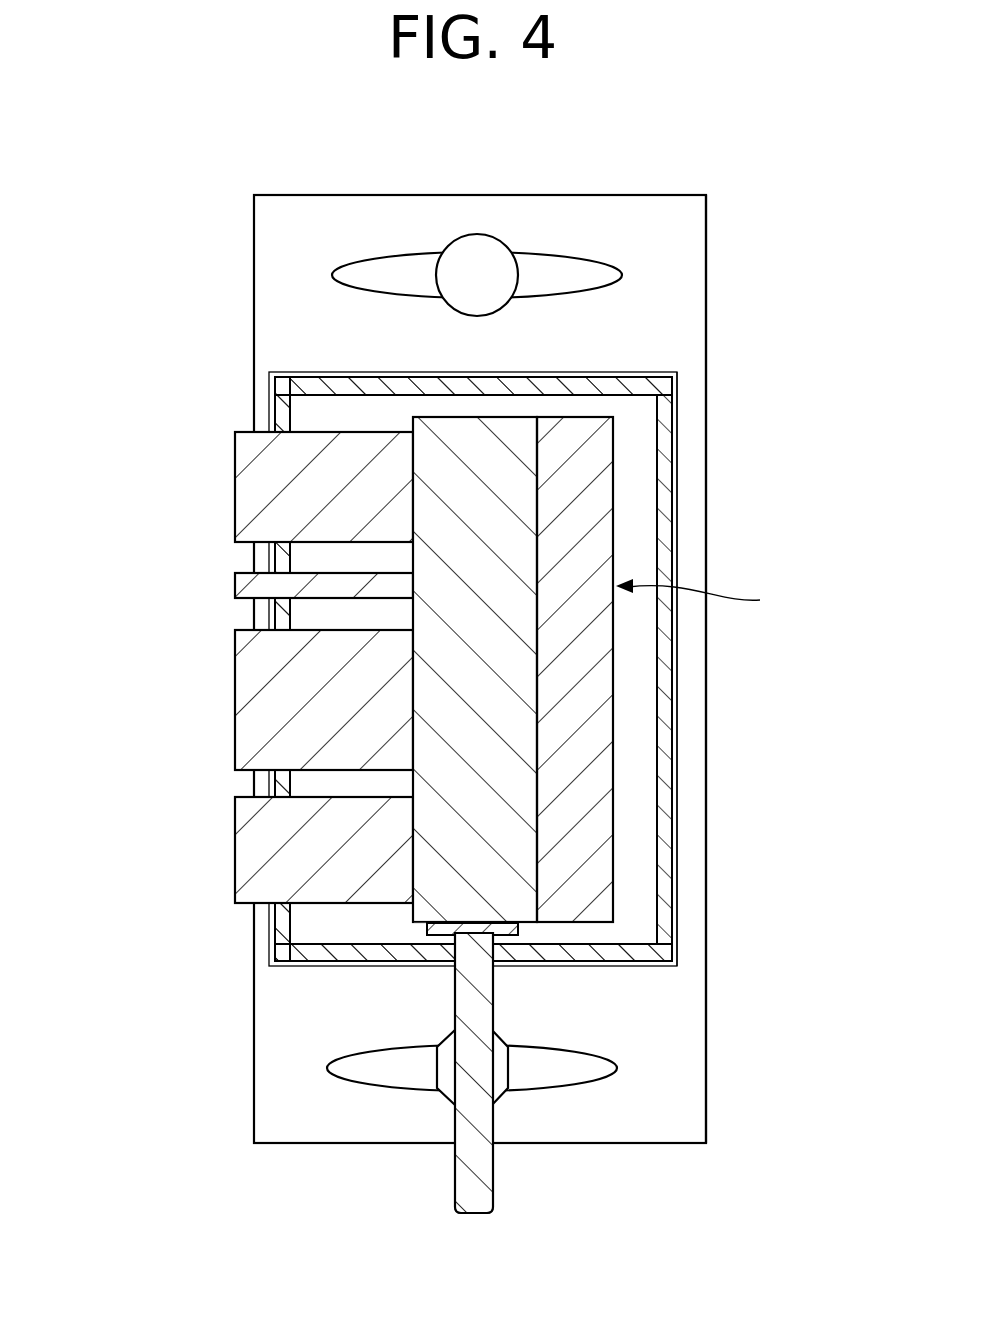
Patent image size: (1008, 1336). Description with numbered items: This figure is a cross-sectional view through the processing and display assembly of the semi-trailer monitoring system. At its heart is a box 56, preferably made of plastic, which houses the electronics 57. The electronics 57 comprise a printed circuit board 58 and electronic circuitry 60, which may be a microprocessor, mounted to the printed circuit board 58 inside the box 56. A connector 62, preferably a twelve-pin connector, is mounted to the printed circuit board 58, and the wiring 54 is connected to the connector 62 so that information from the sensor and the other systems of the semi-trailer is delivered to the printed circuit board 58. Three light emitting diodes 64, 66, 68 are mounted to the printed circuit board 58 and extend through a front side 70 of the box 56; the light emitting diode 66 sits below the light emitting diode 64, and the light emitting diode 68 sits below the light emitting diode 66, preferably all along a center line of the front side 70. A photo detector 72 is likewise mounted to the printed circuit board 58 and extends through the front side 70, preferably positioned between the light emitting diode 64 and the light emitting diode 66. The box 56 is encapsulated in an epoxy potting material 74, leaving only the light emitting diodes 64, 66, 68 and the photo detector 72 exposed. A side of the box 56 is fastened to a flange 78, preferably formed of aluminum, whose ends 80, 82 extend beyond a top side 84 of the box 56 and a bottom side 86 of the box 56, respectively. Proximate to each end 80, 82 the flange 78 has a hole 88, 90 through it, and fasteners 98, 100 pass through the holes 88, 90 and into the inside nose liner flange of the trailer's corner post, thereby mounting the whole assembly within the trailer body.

The wiring 54 is at (480, 1196).
The box 56 is at (665, 500).
The electronics 57 is at (706, 595).
The printed circuit board 58 is at (603, 616).
The electronic circuitry 60 is at (603, 465).
The connector 62 is at (518, 930).
The light emitting diode 64 is at (255, 492).
The light emitting diode 66 is at (240, 686).
The light emitting diode 68 is at (240, 868).
The front side 70 is at (270, 388).
The photo detector 72 is at (240, 580).
The epoxy potting material 74 is at (678, 655).
The flange 78 is at (693, 1062).
The end 80 is at (560, 207).
The end 82 is at (322, 1126).
The top side 84 is at (322, 372).
The bottom side 86 is at (343, 966).
The hole 88 is at (410, 260).
The hole 90 is at (407, 1078).
The fastener 98 is at (481, 247).
The fastener 100 is at (508, 1077).